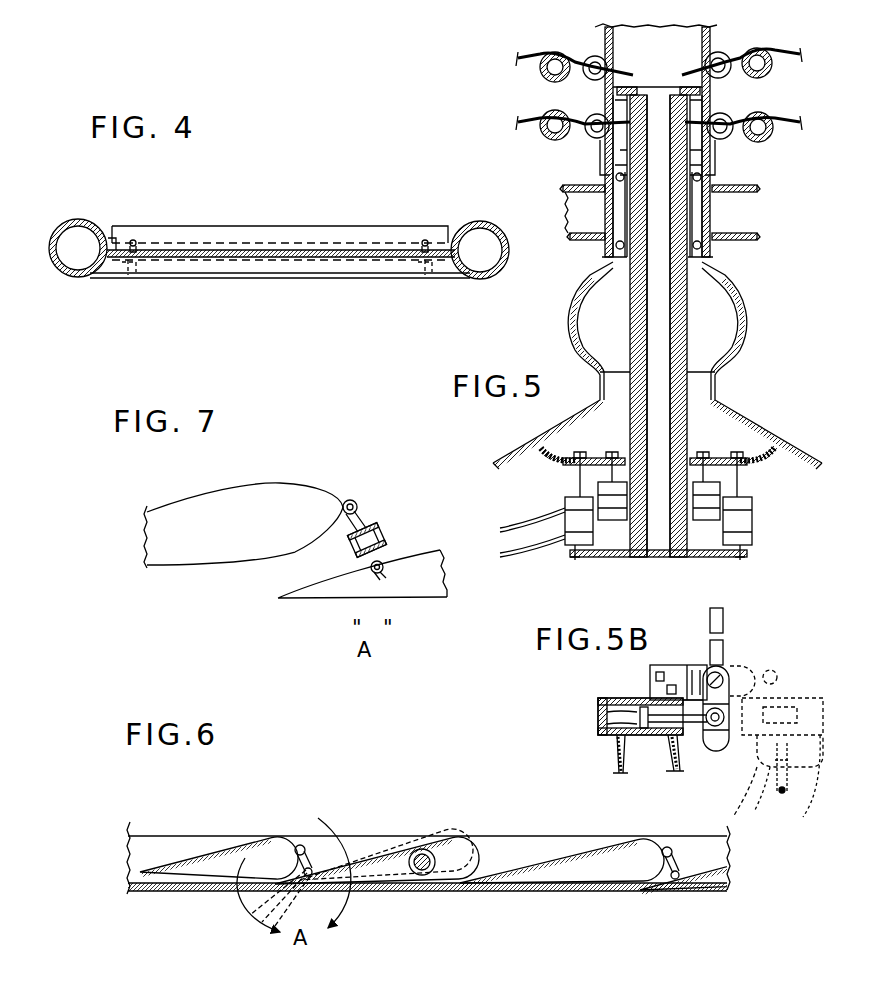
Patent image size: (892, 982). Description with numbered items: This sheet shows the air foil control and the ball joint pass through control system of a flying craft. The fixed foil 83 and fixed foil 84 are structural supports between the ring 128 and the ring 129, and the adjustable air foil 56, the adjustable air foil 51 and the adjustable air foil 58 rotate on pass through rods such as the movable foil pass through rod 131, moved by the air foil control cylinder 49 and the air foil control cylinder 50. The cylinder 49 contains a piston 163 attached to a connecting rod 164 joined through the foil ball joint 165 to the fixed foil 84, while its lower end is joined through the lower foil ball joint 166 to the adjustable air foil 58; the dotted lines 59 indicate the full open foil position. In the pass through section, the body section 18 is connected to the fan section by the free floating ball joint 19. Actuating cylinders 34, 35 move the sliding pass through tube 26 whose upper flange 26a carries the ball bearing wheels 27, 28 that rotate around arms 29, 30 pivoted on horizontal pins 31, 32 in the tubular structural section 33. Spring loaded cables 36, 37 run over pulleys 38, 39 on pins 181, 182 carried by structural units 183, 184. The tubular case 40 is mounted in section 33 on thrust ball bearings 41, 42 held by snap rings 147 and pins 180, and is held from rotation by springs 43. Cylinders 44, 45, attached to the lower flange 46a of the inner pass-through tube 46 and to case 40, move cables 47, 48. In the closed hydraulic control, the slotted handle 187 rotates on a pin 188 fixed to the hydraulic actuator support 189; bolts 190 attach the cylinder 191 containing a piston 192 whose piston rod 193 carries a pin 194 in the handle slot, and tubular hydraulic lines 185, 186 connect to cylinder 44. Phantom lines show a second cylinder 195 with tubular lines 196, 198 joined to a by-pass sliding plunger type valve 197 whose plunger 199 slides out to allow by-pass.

In FIG. 4, the ring 128 is at (104, 238).
In FIG. 4, the ring 129 is at (476, 221).
In FIG. 6, the ring 129 is at (518, 850).
In FIG. 4, the movable foil pass through rod 131 is at (112, 238).
In FIG. 4, the adjustable air foil 56 is at (270, 226).
In FIG. 4, the fixed foil 83 is at (230, 279).
In FIG. 4, the air foil control cylinder 50 is at (128, 276).
In FIG. 4, the air foil control cylinder 49 is at (422, 262).
In FIG. 7, the air foil control cylinder 49 is at (385, 530).
In FIG. 6, the air foil control cylinder 49 is at (312, 838).
In FIG. 5, the upper flange 26a is at (656, 140).
In FIG. 5, the ball bearing wheel 28 is at (662, 140).
In FIG. 5, the ball bearing wheel 27 is at (682, 160).
In FIG. 5, the cable 47 is at (535, 55).
In FIG. 5, the cable 48 is at (778, 56).
In FIG. 5, the horizontal pin 31 is at (600, 100).
In FIG. 5, the horizontal pin 32 is at (715, 100).
In FIG. 5, the pin 181 is at (540, 112).
In FIG. 5, the pin 182 is at (774, 114).
In FIG. 5, the spring loaded cable 36 is at (600, 142).
In FIG. 5, the pulley 39 is at (760, 138).
In FIG. 5, the pulley 38 is at (600, 148).
In FIG. 5, the arm 30 is at (735, 152).
In FIG. 5, the spring loaded cable 37 is at (770, 140).
In FIG. 5, the arm 29 is at (540, 143).
In FIG. 5, the structural unit 183 is at (600, 168).
In FIG. 5, the structural unit 184 is at (715, 168).
In FIG. 5, the thrust ball bearing 41 is at (712, 203).
In FIG. 5, the thrust ball bearing 42 is at (712, 222).
In FIG. 5, the pin 180 is at (563, 200).
In FIG. 5, the snap ring 147 is at (617, 237).
In FIG. 5, the free floating ball joint 19 is at (568, 331).
In FIG. 5, the tubular structural section 33 is at (720, 266).
In FIG. 5, the tubular case 40 is at (694, 336).
In FIG. 5, the body section 18 is at (545, 440).
In FIG. 5, the spring 43 is at (530, 470).
In FIG. 5, the inner pass-through-tube 46 is at (668, 540).
In FIG. 5, the lower flange 46a is at (710, 558).
In FIG. 5, the actuating cylinder 34 is at (598, 493).
In FIG. 5, the actuating cylinder 35 is at (745, 500).
In FIG. 5, the cylinder 44 is at (600, 560).
In FIG. 5, the cylinder 45 is at (752, 545).
In FIG. 5, the tubular hydraulic line 185 is at (528, 530).
In FIG. 5B, the tubular hydraulic line 185 is at (670, 752).
In FIG. 5, the tubular hydraulic line 186 is at (540, 556).
In FIG. 5B, the tubular hydraulic line 186 is at (612, 750).
In FIG. 5, the sliding pass through tube 26 is at (628, 520).
In FIG. 7, the fixed foil 84 is at (292, 488).
In FIG. 6, the fixed foil 84 is at (170, 848).
In FIG. 7, the foil ball joint 165 is at (348, 500).
In FIG. 7, the connecting rod 164 is at (362, 510).
In FIG. 7, the piston 163 is at (368, 566).
In FIG. 7, the adjustable air foil 58 is at (447, 598).
In FIG. 6, the adjustable air foil 58 is at (365, 858).
In FIG. 7, the lower foil ball joint 166 is at (280, 597).
In FIG. 6, the dotted lines 59 is at (440, 850).
In FIG. 6, the adjustable air foil 51 is at (715, 892).
In FIG. 5B, the piston 192 is at (598, 722).
In FIG. 5B, the piston rod 193 is at (672, 735).
In FIG. 5B, the bolt 190 is at (652, 672).
In FIG. 5B, the pin 188 is at (725, 665).
In FIG. 5B, the hydraulic actuator support 189 is at (705, 672).
In FIG. 5B, the slotted handle 187 is at (723, 616).
In FIG. 5B, the pin 194 is at (715, 727).
In FIG. 5B, the cylinder 191 is at (622, 698).
In FIG. 5B, the cylinder 195 is at (778, 690).
In FIG. 5B, the tubular line 196 is at (745, 787).
In FIG. 5B, the by-pass sliding plunger type valve 197 is at (755, 808).
In FIG. 5B, the tubular line 198 is at (795, 800).
In FIG. 5B, the plunger 199 is at (782, 795).